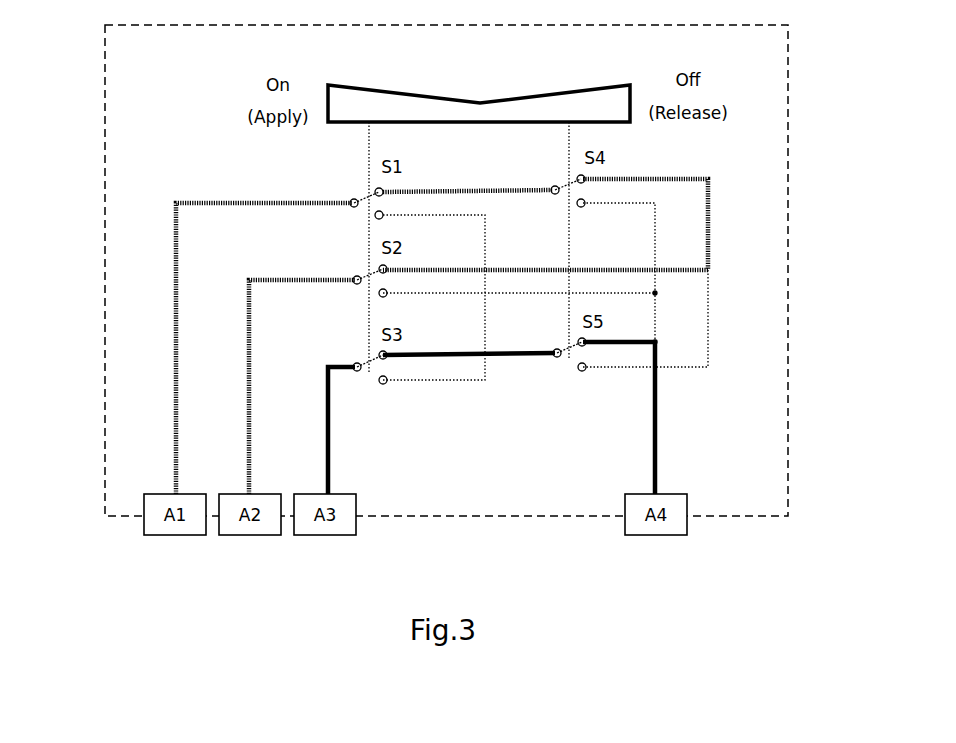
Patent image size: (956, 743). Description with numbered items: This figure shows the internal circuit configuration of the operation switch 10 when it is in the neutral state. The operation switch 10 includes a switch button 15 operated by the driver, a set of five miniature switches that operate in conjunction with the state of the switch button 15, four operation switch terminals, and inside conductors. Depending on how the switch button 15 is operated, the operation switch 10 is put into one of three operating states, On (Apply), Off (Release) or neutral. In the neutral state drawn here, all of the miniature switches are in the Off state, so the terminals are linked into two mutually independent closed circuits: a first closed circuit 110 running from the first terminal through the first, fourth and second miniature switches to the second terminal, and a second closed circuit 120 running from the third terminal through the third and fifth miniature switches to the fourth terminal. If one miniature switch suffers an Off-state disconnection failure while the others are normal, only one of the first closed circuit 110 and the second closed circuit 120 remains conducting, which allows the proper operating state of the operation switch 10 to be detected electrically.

The operation switch 10 is at (788, 133).
The switch button 15 is at (410, 93).
The first closed circuit 110 is at (249, 320).
The second closed circuit 120 is at (655, 467).